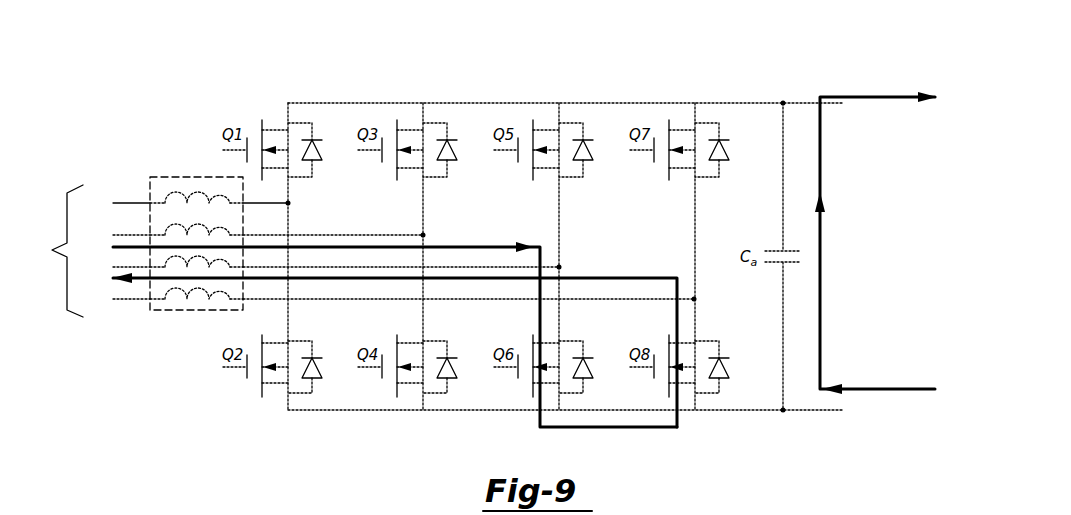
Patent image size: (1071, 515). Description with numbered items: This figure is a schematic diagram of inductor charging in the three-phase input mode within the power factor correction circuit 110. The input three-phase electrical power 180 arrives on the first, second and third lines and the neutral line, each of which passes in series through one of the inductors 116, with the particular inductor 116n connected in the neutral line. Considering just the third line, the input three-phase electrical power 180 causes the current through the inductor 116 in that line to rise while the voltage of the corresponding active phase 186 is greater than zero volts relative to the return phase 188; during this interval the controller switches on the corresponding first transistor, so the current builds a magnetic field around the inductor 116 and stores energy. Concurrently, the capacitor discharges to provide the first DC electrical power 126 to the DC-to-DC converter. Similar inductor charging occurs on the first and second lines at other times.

The power factor correction circuit 110 is at (249, 48).
The inductors 116 is at (176, 176).
The particular inductor 116n is at (186, 298).
The first DC electrical power 126 is at (876, 96).
The input three-phase electrical power 180 is at (61, 251).
The active phase 186 is at (478, 246).
The return phase 188 is at (618, 277).